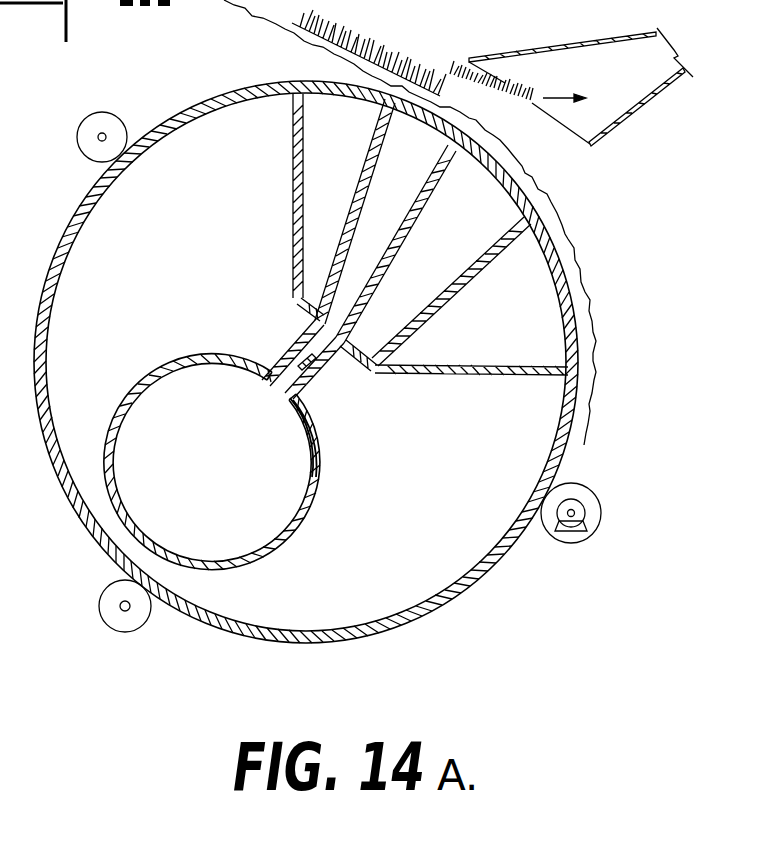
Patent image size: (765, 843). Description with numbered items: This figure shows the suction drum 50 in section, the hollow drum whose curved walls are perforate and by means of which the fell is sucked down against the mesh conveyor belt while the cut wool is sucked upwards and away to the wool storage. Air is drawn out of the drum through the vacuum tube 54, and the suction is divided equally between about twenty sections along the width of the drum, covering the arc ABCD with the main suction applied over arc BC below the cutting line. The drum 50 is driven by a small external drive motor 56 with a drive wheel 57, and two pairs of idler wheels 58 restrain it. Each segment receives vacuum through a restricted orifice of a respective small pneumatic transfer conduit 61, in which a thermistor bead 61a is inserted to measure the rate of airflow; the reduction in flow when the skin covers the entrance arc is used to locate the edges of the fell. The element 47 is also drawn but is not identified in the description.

The suction drum 50 is at (133, 150).
The vacuum tube 54 is at (312, 502).
The external drive motor 56 is at (585, 513).
The drive wheel 57 is at (590, 488).
The idler wheels 58 is at (160, 645).
The pneumatic transfer conduit 61 is at (298, 388).
The thermistor bead 61a is at (312, 370).
The feed hopper 47 is at (598, 143).